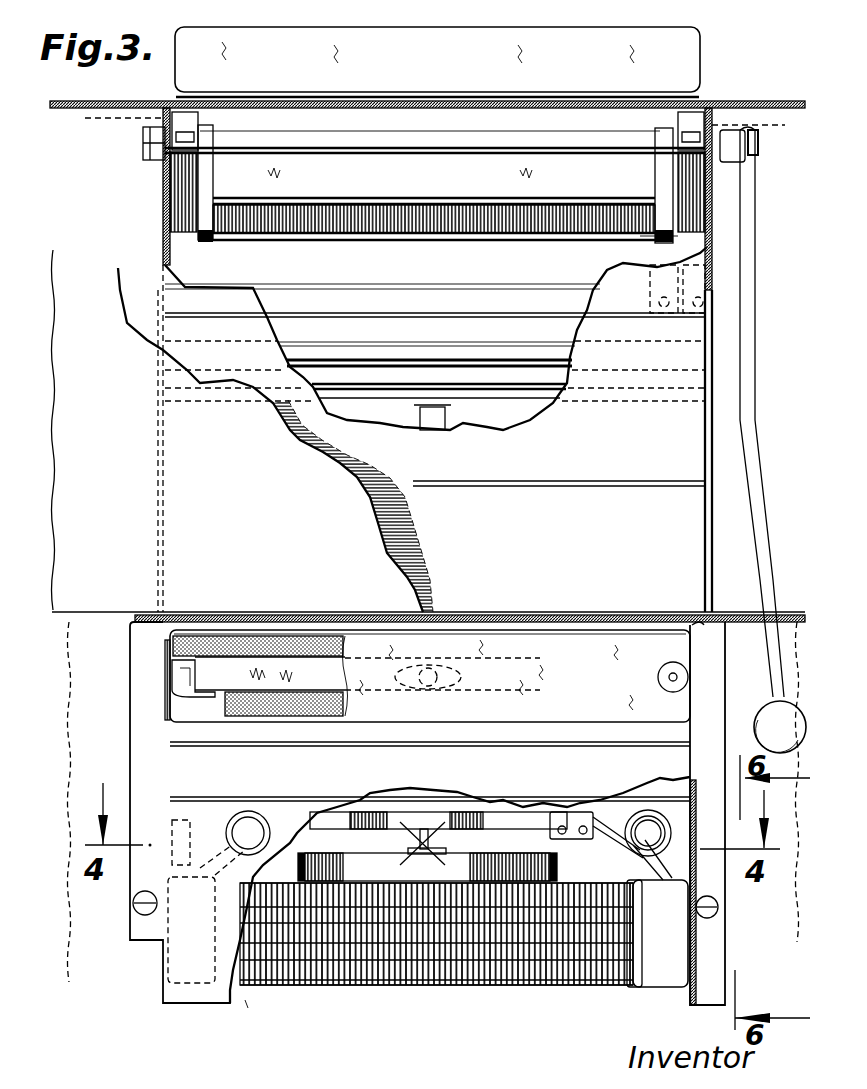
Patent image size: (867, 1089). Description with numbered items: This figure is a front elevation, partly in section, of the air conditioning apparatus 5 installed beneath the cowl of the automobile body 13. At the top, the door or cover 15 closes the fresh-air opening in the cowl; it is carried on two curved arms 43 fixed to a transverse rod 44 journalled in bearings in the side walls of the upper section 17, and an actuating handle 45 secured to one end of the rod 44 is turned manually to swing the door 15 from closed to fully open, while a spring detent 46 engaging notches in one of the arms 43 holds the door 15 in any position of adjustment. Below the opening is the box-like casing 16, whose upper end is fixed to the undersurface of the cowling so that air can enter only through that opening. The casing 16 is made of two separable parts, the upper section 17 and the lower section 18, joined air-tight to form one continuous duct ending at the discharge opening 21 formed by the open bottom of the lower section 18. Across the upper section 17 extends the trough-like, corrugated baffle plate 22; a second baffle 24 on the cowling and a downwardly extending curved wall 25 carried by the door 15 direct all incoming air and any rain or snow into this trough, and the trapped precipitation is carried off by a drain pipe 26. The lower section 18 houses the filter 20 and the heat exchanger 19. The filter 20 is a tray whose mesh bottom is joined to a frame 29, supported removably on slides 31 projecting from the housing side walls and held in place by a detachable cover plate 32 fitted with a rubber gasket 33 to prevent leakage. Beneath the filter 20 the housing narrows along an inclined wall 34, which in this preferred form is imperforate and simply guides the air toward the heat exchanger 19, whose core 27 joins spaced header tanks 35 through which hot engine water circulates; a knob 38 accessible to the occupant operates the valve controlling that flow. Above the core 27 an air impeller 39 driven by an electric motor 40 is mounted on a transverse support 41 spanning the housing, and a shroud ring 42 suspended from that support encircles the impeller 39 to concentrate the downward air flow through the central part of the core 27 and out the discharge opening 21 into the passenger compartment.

The air conditioning apparatus 5 is at (155, 958).
The automobile body 13 is at (715, 103).
The door or cover 15 is at (440, 62).
The casing 16 is at (192, 297).
The upper section 17 is at (242, 298).
The lower section 18 is at (285, 767).
The heat exchanger 19 is at (370, 990).
The filter 20 is at (298, 670).
The discharge opening 21 is at (245, 1008).
The baffle plate 22 is at (427, 326).
The second baffle 24 is at (342, 218).
The curved wall 25 is at (353, 180).
The drain pipe 26 is at (448, 418).
The core 27 is at (442, 965).
The frame 29 is at (242, 668).
The slides 31 is at (195, 695).
The cover plate 32 is at (588, 660).
The rubber gasket 33 is at (264, 713).
The inclined wall 34 is at (355, 783).
The header tanks 35 is at (178, 983).
The knob 38 is at (648, 833).
The air impeller 39 is at (400, 840).
The electric motor 40 is at (448, 803).
The transverse support 41 is at (520, 810).
The shroud ring 42 is at (405, 870).
The curved arms 43 is at (210, 185).
The transverse rod 44 is at (420, 145).
The actuating handle 45 is at (748, 348).
The spring detent 46 is at (655, 247).